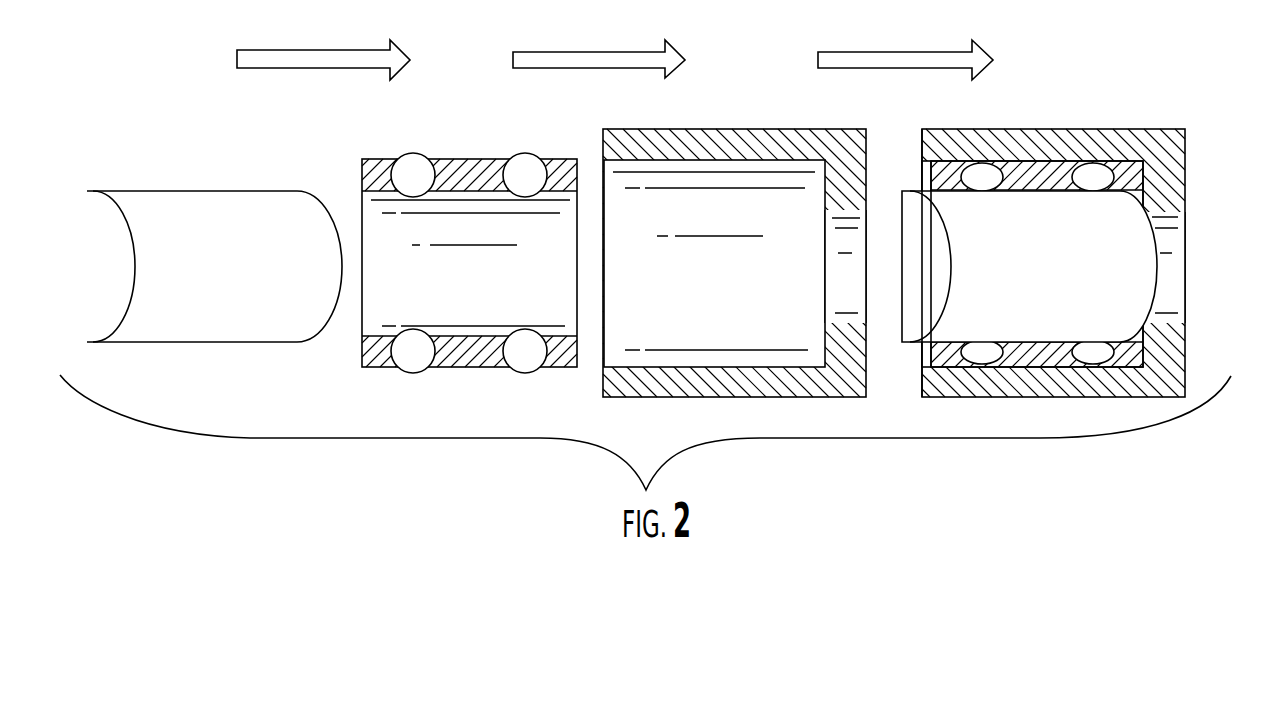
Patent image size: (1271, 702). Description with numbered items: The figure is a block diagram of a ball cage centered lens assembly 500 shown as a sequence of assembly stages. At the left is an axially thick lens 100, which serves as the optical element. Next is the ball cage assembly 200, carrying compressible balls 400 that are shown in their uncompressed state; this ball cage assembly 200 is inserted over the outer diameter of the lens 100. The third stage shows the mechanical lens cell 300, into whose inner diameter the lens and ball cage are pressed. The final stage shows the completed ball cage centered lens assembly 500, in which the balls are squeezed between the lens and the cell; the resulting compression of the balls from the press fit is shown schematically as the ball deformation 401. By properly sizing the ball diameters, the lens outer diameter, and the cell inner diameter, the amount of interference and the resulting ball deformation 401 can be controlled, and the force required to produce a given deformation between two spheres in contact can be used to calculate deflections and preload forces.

The axially thick lens 100 is at (289, 224).
The ball cage assembly 200 is at (469, 240).
The mechanical lens cell 300 is at (822, 205).
The uncompressed balls 400 is at (413, 197).
The ball deformation 401 is at (986, 188).
The ball cage centered lens assembly 500 is at (1057, 263).